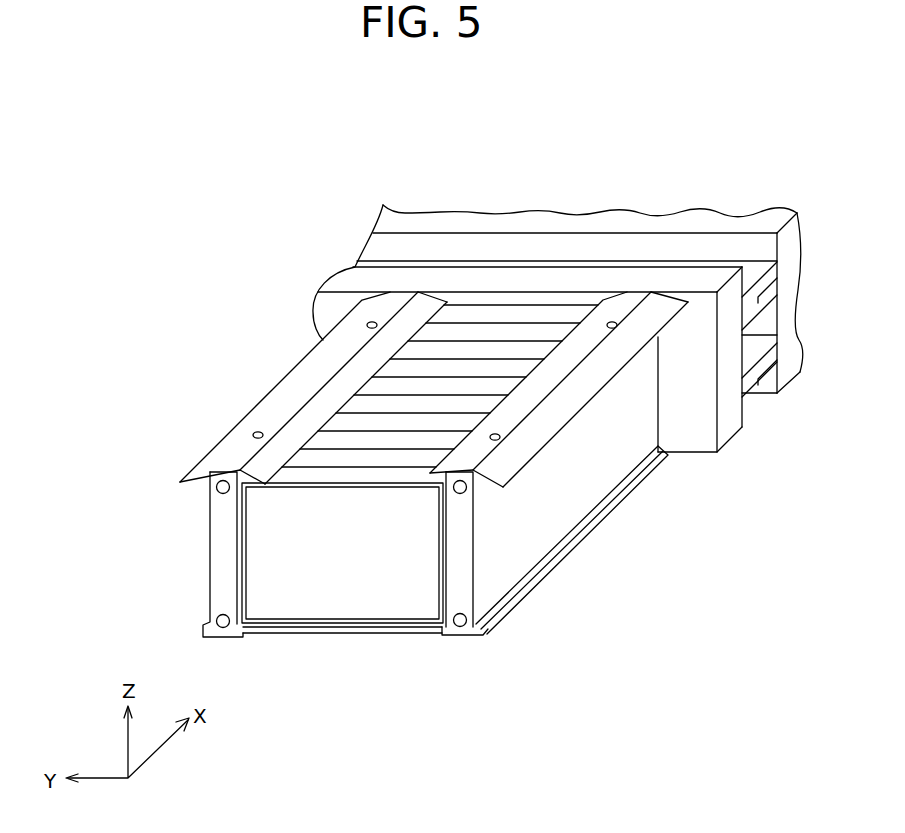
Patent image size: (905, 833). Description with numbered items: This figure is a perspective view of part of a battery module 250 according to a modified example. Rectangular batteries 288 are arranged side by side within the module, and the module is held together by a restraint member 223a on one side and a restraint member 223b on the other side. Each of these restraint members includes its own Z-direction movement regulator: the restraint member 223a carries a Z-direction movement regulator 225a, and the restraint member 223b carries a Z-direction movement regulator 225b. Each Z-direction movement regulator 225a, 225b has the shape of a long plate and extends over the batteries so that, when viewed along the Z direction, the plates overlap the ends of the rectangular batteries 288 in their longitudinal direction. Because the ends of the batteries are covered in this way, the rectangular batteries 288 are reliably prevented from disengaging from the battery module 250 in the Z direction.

The battery module 250 is at (516, 191).
The rectangular batteries 288 is at (500, 332).
The Z-direction movement regulator 225a is at (417, 318).
The Z-direction movement regulator 225b is at (600, 318).
The restraint member 223a is at (222, 571).
The restraint member 223b is at (462, 568).